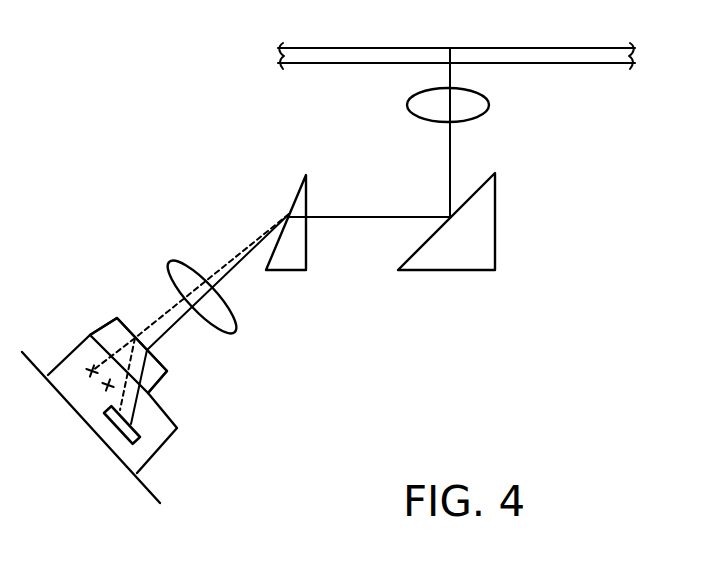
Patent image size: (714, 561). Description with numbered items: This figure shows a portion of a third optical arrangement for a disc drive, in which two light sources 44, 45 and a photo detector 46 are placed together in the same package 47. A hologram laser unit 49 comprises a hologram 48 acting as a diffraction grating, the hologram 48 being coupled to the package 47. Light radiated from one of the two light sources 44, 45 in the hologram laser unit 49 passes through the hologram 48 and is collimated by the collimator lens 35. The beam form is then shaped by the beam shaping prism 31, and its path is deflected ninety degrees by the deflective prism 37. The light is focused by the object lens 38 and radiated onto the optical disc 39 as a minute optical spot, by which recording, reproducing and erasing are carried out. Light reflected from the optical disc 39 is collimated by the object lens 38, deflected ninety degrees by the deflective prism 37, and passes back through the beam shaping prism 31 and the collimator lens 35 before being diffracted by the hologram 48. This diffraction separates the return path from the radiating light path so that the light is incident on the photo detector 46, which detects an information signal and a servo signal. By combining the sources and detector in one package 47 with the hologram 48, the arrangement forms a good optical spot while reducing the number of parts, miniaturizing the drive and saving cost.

The beam shaping prism 31 is at (288, 214).
The collimator lens 35 is at (170, 282).
The deflective prism 37 is at (496, 224).
The object lens 38 is at (489, 105).
The optical disc 39 is at (492, 52).
The light source 44 is at (90, 374).
The light source 45 is at (106, 389).
The photo detector 46 is at (145, 445).
The package 47 is at (70, 355).
The hologram 48 is at (166, 384).
The hologram laser unit 49 is at (86, 452).